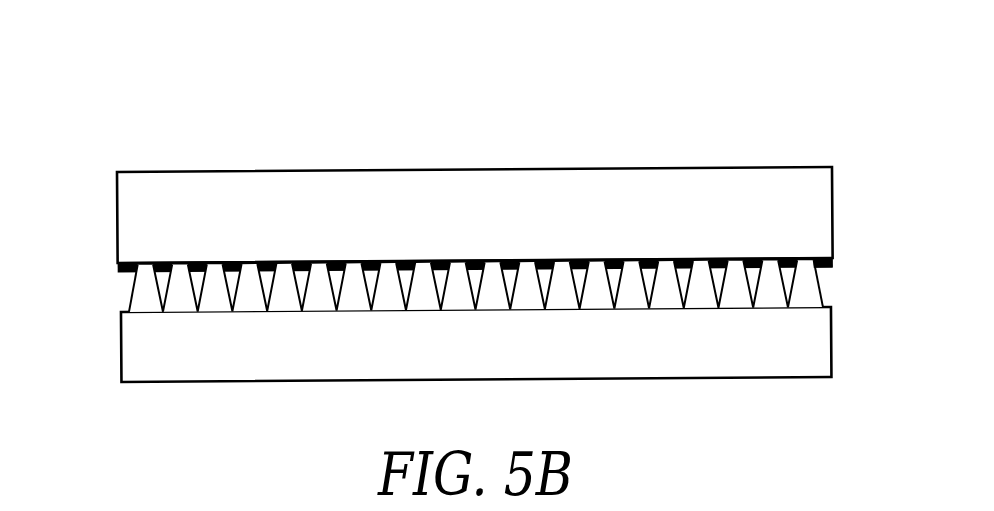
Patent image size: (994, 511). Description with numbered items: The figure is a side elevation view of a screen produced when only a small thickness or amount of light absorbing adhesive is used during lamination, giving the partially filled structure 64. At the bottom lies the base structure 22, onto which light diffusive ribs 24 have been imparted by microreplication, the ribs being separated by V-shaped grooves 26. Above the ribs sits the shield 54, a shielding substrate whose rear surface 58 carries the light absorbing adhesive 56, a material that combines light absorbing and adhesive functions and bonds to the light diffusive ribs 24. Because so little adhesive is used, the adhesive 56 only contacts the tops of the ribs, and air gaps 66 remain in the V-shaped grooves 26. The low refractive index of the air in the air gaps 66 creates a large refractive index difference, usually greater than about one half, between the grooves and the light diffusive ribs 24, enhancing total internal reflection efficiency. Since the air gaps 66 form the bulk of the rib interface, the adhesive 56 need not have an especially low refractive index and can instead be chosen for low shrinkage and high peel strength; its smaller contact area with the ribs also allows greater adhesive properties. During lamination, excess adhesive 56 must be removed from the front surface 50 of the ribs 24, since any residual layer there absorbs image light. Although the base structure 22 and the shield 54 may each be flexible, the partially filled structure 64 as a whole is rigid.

The base structure 22 is at (138, 347).
The light diffusive ribs 24 is at (140, 292).
The V-shaped grooves 26 is at (131, 280).
The front surface 50 is at (802, 262).
The shield 54 is at (142, 188).
The light absorbing adhesive 56 is at (118, 268).
The rear surface 58 is at (680, 260).
The partially filled structure 64 is at (464, 225).
The air gaps 66 is at (787, 281).